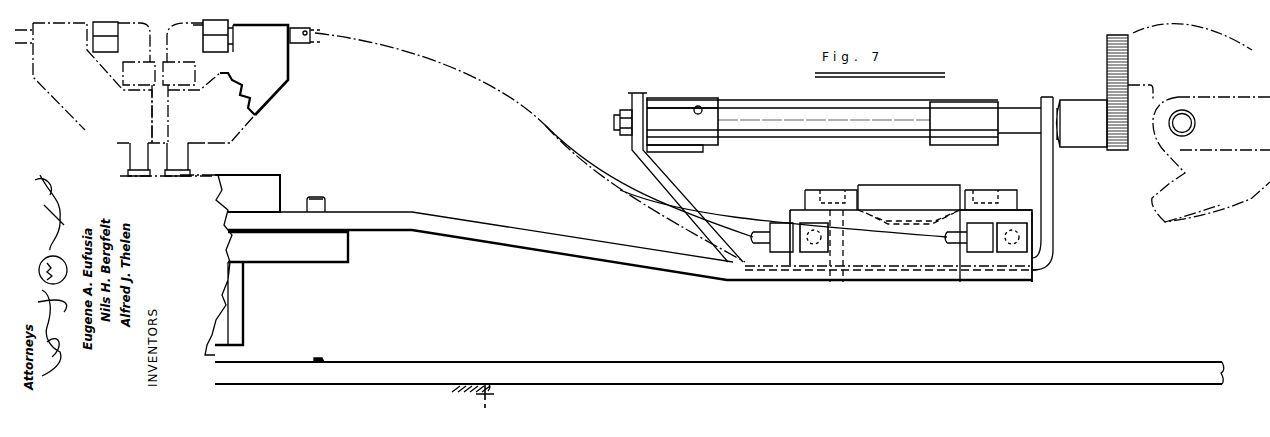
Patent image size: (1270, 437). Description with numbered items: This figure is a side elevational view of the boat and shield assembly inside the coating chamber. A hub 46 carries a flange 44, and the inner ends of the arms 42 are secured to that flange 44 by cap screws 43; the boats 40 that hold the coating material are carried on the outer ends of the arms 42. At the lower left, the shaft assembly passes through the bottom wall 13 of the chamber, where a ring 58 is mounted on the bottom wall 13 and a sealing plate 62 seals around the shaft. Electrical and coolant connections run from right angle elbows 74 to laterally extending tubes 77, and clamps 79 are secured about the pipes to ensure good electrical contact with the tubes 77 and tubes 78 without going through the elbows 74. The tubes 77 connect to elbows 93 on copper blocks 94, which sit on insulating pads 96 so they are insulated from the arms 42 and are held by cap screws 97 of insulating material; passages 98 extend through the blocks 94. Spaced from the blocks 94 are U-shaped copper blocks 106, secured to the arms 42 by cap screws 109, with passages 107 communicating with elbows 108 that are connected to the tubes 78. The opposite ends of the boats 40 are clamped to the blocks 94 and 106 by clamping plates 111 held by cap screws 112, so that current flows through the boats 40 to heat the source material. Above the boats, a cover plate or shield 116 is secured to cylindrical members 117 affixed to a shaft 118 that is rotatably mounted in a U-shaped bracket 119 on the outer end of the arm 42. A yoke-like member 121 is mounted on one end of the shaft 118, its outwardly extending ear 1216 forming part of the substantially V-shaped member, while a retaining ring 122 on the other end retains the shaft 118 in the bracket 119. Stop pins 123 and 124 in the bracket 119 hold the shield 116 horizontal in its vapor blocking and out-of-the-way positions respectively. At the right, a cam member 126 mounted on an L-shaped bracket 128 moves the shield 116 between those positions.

The bottom wall 13 is at (415, 366).
The boat 40 is at (930, 208).
The arm 42 is at (470, 228).
The cap screw 43 is at (325, 203).
The flange 44 is at (340, 256).
The hub 46 is at (250, 306).
The ring 58 is at (494, 404).
The sealing plate 62 is at (320, 360).
The right angle elbow 74 is at (197, 26).
The tube 77 is at (318, 16).
The tube 78 is at (594, 205).
The clamp 79 is at (270, 75).
The elbow 93 is at (1020, 236).
The block 94 is at (1032, 220).
The insulating pad 96 is at (1008, 270).
The cap screw 97 is at (980, 290).
The passage 98 is at (1048, 264).
The U-shaped block 106 is at (880, 255).
The passage 107 is at (812, 262).
The elbow 108 is at (808, 225).
The cap screw 109 is at (838, 288).
The clamping plate 111 is at (812, 190).
The cap screw 112 is at (840, 190).
The cover plate or shield 116 is at (765, 120).
The cylindrical member 117 is at (694, 140).
The shaft 118 is at (848, 125).
The U-shaped bracket 119 is at (688, 212).
The yoke-like member 121 is at (1076, 97).
The knurled wheel 1216 is at (1128, 60).
The retaining ring 122 is at (620, 105).
The stop pin 123 is at (700, 106).
The stop pin 124 is at (703, 158).
The cam member 126 is at (1185, 226).
The L-shaped bracket 128 is at (1205, 160).